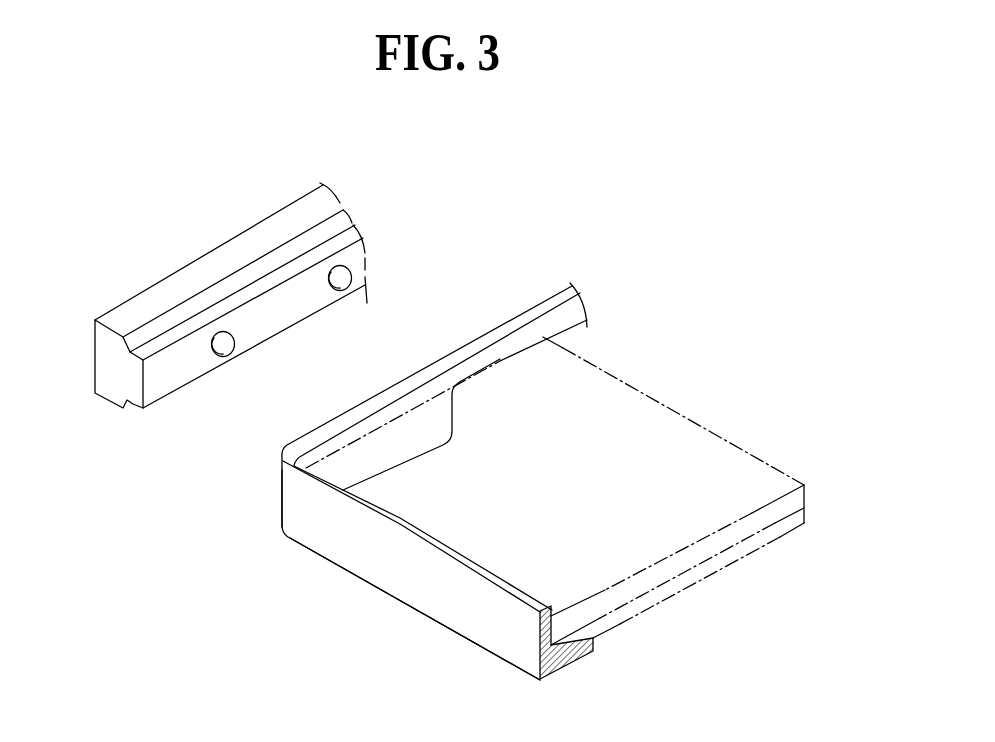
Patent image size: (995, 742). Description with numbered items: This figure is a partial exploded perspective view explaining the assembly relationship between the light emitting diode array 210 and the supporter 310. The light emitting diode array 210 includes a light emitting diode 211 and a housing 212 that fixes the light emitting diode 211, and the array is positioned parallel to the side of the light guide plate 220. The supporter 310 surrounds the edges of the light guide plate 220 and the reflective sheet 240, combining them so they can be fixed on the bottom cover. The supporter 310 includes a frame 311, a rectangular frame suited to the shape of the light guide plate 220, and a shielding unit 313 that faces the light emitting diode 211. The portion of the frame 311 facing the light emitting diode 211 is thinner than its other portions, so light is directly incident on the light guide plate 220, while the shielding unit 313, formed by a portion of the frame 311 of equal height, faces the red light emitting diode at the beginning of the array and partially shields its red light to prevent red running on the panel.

The light emitting diode array 210 is at (186, 285).
The light emitting diode 211 is at (233, 352).
The housing 212 is at (113, 364).
The light guide plate 220 is at (760, 520).
The reflective sheet 240 is at (690, 580).
The supporter 310 is at (501, 481).
The frame 311 is at (400, 585).
The shielding unit 313 is at (442, 418).